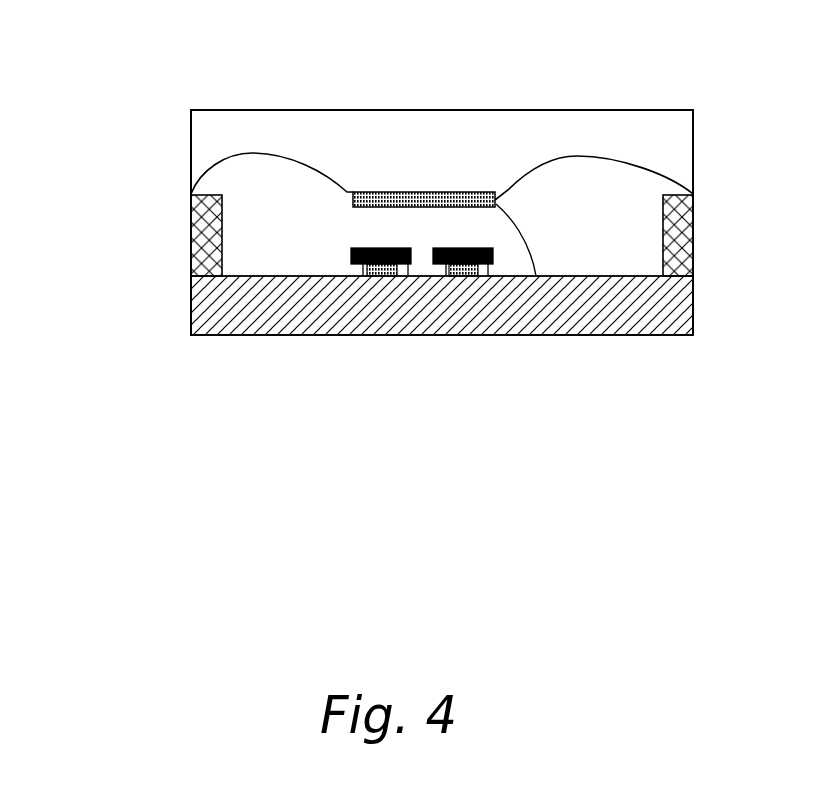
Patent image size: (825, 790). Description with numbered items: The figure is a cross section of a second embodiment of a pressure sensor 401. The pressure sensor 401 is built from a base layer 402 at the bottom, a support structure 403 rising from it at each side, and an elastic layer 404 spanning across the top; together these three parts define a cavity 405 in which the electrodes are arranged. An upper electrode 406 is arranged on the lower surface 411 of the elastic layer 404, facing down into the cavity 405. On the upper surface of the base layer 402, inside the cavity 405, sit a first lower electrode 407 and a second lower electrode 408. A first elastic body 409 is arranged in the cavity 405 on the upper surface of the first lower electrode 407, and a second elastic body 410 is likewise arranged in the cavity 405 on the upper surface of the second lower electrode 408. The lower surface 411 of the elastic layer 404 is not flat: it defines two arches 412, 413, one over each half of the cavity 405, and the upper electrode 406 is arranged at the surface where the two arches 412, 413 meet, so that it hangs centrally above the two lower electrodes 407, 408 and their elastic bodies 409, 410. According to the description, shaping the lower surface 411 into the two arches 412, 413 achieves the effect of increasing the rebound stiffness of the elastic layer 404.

The pressure sensor 401 is at (141, 108).
The base layer 402 is at (683, 310).
The support structure 403 is at (683, 235).
The elastic layer 404 is at (683, 152).
The cavity 405 is at (603, 263).
The upper electrode 406 is at (517, 295).
The first lower electrode 407 is at (370, 276).
The second lower electrode 408 is at (408, 276).
The first elastic body 409 is at (452, 276).
The second elastic body 410 is at (488, 276).
The lower surface 411 is at (371, 192).
The arch 412 is at (255, 152).
The arch 413 is at (588, 155).